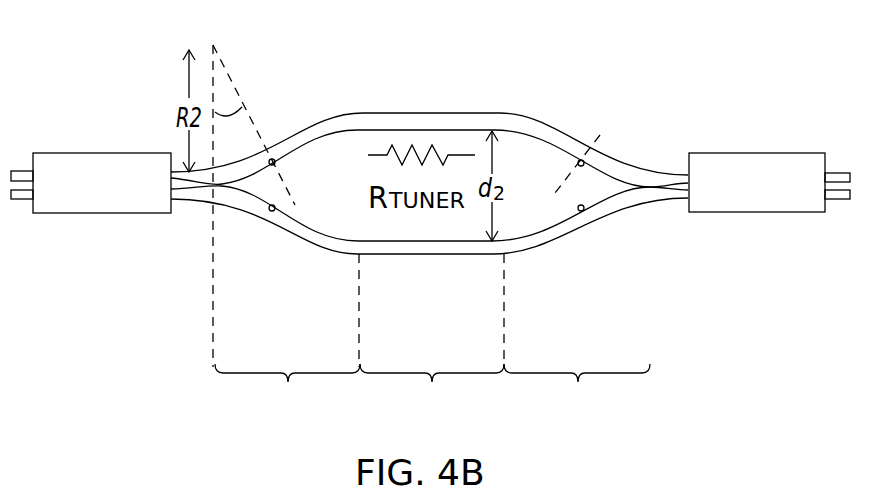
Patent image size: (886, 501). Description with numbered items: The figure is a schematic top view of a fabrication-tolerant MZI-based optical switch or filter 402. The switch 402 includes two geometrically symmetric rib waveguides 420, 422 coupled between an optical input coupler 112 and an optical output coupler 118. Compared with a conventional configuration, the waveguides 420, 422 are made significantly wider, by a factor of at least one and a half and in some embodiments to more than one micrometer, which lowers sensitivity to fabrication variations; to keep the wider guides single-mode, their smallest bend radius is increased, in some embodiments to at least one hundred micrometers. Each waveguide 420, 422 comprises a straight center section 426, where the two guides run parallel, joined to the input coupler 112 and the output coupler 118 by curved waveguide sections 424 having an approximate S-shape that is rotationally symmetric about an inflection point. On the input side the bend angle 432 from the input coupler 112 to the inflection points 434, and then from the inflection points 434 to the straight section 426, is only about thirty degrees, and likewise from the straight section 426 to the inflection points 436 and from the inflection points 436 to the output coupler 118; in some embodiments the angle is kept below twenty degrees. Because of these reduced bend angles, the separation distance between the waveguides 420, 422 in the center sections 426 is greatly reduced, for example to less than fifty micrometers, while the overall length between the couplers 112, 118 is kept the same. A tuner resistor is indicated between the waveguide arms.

The optical input coupler 112 is at (80, 153).
The optical output coupler 118 is at (784, 153).
The fabrication-tolerant MZI-based optical switch 402 is at (483, 142).
The first waveguide 420 is at (538, 126).
The second waveguide 422 is at (538, 246).
The curved waveguide sections 424 is at (432, 389).
The straight center waveguide sections 426 is at (431, 334).
The bend angle 432 is at (227, 96).
The inflection points 434 is at (273, 158).
The inflection points 436 is at (585, 163).